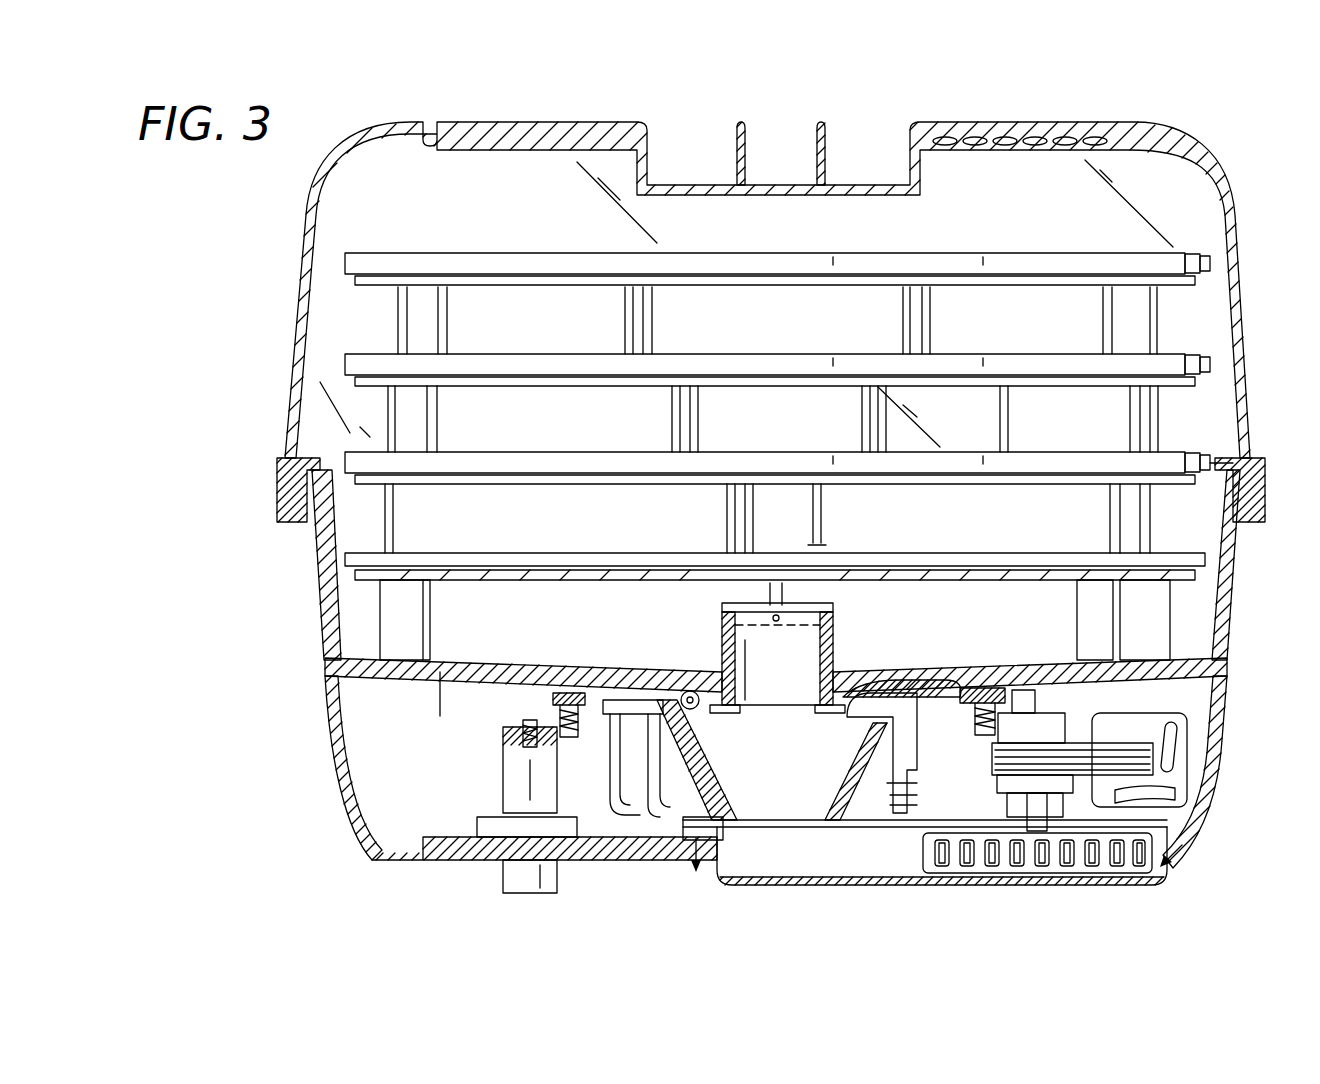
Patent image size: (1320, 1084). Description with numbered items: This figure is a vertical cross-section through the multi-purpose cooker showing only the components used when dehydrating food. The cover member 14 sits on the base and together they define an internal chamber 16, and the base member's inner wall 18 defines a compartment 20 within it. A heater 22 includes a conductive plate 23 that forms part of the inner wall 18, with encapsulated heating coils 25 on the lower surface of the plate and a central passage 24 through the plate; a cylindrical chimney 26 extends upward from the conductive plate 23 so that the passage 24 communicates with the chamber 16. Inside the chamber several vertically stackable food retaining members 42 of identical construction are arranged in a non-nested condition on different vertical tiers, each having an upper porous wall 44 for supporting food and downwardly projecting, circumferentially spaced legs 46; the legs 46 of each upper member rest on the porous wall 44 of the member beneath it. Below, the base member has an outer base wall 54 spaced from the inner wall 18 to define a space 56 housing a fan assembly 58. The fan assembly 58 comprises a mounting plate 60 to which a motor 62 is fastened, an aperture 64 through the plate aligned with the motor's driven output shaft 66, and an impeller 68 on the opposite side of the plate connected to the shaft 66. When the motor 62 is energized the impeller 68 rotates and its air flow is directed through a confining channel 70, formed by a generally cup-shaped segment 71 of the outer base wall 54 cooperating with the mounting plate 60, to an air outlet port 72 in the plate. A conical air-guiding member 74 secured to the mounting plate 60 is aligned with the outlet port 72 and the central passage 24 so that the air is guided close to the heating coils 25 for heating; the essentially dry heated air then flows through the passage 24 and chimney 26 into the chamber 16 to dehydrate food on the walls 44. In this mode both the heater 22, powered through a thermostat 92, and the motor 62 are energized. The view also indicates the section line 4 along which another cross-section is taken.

The section line 4— 4 is at (938, 870).
The cover member 14 is at (1193, 135).
The internal chamber 16 is at (1197, 204).
The inner wall 18 is at (1040, 690).
The compartment 20 is at (1213, 613).
The heater 22 is at (577, 690).
The conductive plate 23 is at (638, 700).
The central passage 24 is at (722, 677).
The encapsulated heating coils 25 is at (703, 713).
The cylindrical chimney 26 is at (835, 633).
The food retaining member 42 is at (1210, 262).
The upper porous wall 44 is at (1063, 272).
The legs 46 is at (437, 337).
The outer base wall 54 is at (1224, 758).
The space 56 is at (388, 758).
The fan assembly 58 is at (1097, 737).
The mounting plate 60 is at (1190, 817).
The motor 62 is at (997, 767).
The aperture 64 is at (1087, 822).
The driven output shaft 66 is at (1010, 797).
The impeller 68 is at (923, 850).
The confining channel 70 is at (813, 850).
The cup-shaped segment 71 is at (730, 873).
The air outlet port 72 is at (823, 820).
The conical air-guiding member 74 is at (860, 757).
The thermostat 92 is at (620, 753).